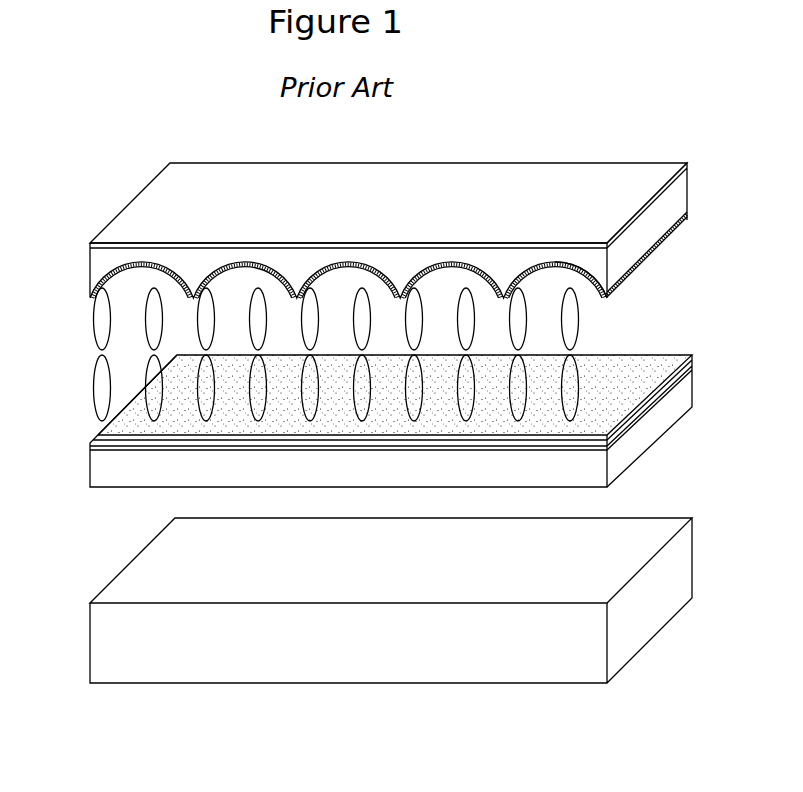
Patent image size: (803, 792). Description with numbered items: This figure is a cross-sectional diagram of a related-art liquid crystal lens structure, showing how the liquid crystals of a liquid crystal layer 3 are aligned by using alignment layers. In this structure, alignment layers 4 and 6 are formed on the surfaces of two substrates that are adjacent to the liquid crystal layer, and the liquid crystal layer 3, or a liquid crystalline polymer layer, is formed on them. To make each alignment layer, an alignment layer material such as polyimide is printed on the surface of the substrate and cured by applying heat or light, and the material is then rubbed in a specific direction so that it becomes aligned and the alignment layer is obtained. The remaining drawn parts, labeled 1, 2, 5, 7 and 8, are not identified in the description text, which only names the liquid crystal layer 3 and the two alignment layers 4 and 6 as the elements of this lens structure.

The upper transparent substrate 1 is at (92, 247).
The lenticular lens layer 2 is at (92, 270).
The liquid crystal layer 3 is at (96, 322).
The alignment layer 4 is at (97, 433).
The lower electrode substrate 5 is at (90, 451).
The alignment layer 6 is at (662, 245).
The lens surface 7 is at (563, 272).
The display panel 8 is at (684, 599).